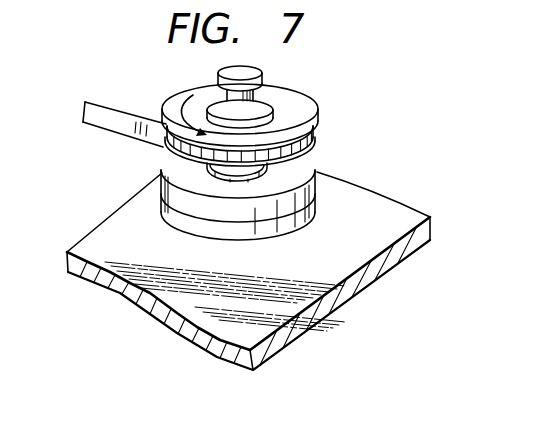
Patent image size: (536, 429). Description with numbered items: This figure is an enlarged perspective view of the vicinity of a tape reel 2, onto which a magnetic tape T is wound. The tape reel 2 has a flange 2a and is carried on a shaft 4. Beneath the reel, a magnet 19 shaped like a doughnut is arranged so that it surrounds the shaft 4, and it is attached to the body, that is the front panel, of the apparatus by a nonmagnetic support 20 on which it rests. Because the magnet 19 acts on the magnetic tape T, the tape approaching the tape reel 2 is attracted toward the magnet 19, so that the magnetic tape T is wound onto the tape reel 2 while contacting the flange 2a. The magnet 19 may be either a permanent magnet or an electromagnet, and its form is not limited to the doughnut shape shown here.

The tape reel 2 is at (320, 111).
The flange 2a is at (307, 147).
The shaft 4 is at (261, 178).
The magnet 19 is at (167, 200).
The nonmagnetic support 20 is at (194, 222).
The magnetic tape T is at (107, 122).